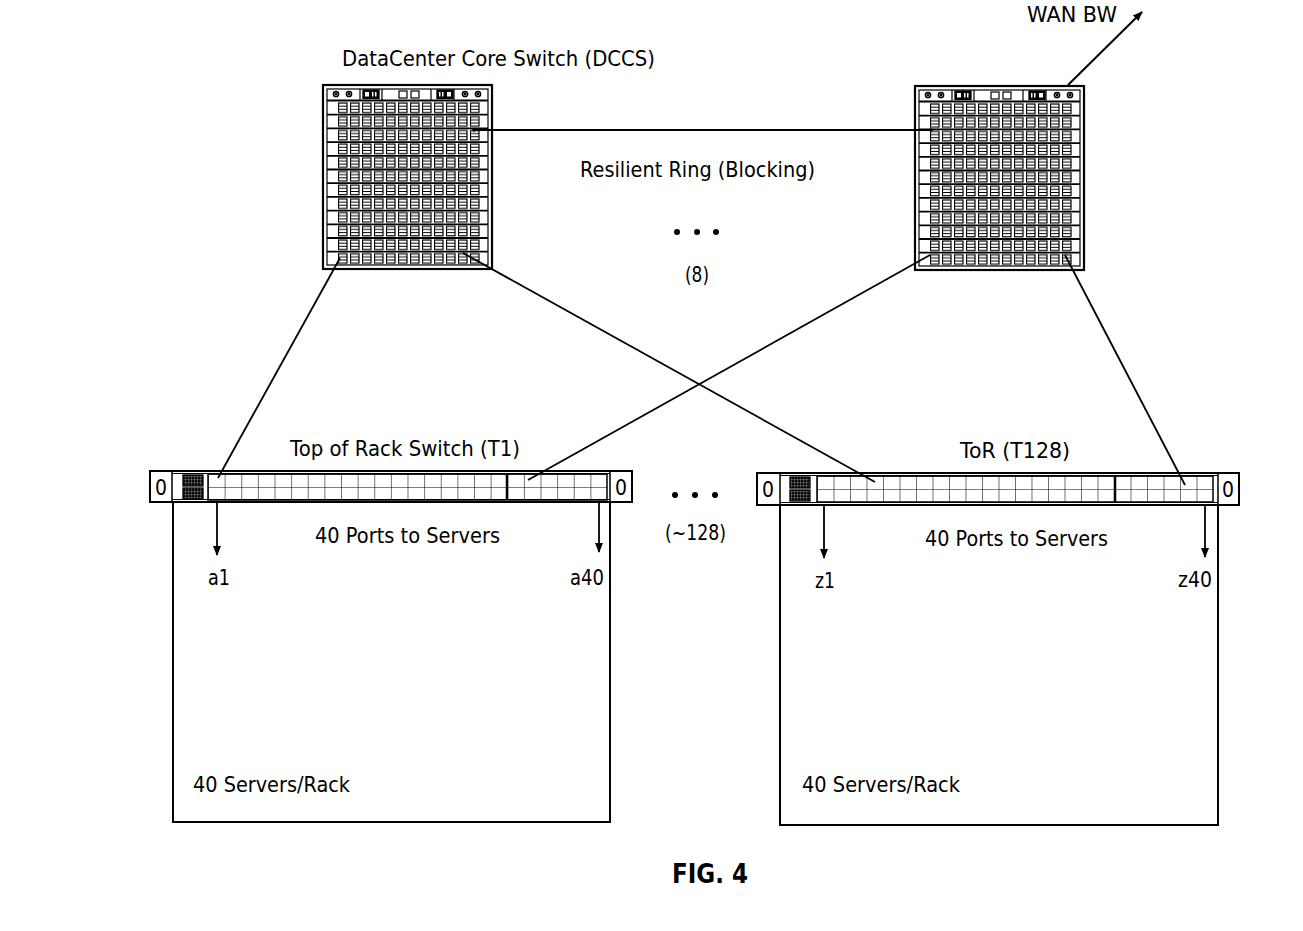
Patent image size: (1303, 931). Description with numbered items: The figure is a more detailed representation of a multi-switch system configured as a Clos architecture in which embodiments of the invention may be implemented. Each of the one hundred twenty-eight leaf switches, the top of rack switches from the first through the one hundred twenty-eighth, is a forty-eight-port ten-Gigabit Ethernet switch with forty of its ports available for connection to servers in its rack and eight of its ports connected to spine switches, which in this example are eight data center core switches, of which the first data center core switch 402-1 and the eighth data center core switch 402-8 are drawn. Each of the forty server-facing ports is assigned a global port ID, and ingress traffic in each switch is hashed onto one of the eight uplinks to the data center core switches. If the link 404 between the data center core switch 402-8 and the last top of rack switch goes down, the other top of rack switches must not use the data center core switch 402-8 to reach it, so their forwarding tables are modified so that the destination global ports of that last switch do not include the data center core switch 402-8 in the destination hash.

The data center core switch 402-1 is at (330, 88).
The data center core switch 402-8 is at (920, 89).
The link 404 is at (1104, 326).